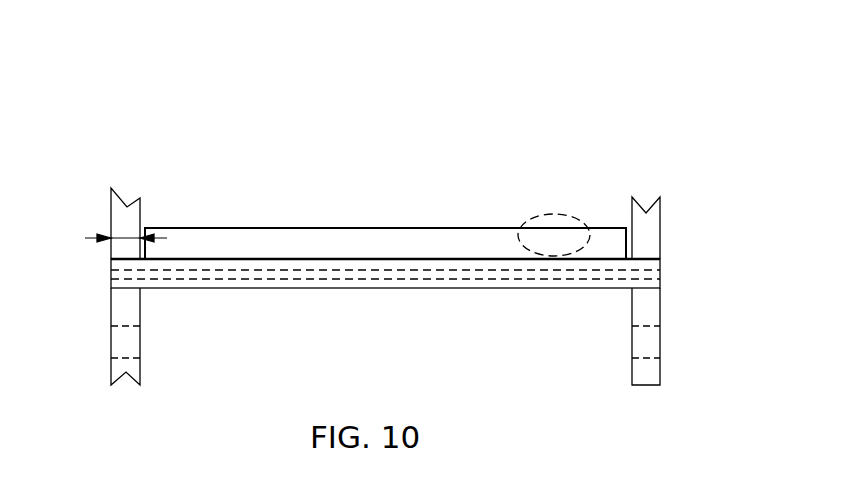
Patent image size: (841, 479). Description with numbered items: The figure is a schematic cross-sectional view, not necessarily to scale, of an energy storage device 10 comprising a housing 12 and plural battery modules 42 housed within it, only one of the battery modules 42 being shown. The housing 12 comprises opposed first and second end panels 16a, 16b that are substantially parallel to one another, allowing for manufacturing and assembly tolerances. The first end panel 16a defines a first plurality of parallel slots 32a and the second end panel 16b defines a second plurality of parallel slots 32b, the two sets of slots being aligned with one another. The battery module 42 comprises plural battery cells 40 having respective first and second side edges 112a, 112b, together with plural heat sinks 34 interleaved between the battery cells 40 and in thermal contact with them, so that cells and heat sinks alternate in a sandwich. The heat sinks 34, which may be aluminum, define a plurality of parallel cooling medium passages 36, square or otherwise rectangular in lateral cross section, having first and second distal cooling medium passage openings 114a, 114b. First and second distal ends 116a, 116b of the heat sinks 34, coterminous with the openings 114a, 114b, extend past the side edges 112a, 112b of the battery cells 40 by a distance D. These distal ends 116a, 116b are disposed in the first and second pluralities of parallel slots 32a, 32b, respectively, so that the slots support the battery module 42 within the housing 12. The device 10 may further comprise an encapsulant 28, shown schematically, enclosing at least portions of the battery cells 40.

The energy storage device 10 is at (446, 129).
The housing 12 is at (111, 197).
The first end panel 16a is at (118, 310).
The second end panel 16b is at (652, 310).
The encapsulant 28 is at (540, 214).
The first plurality of parallel slots 32a is at (120, 345).
The second plurality of parallel slots 32b is at (652, 345).
The heat sink 34 is at (376, 289).
The cooling medium passage 36 is at (270, 272).
The battery cell 40 is at (381, 241).
The battery module 42 is at (271, 228).
The first side edge 112a is at (145, 250).
The second side edge 112b is at (612, 228).
The first distal cooling medium passage opening 114a is at (111, 274).
The second distal cooling medium passage opening 114b is at (660, 272).
The first distal end 116a is at (111, 288).
The second distal end 116b is at (660, 288).
The distance D is at (127, 237).